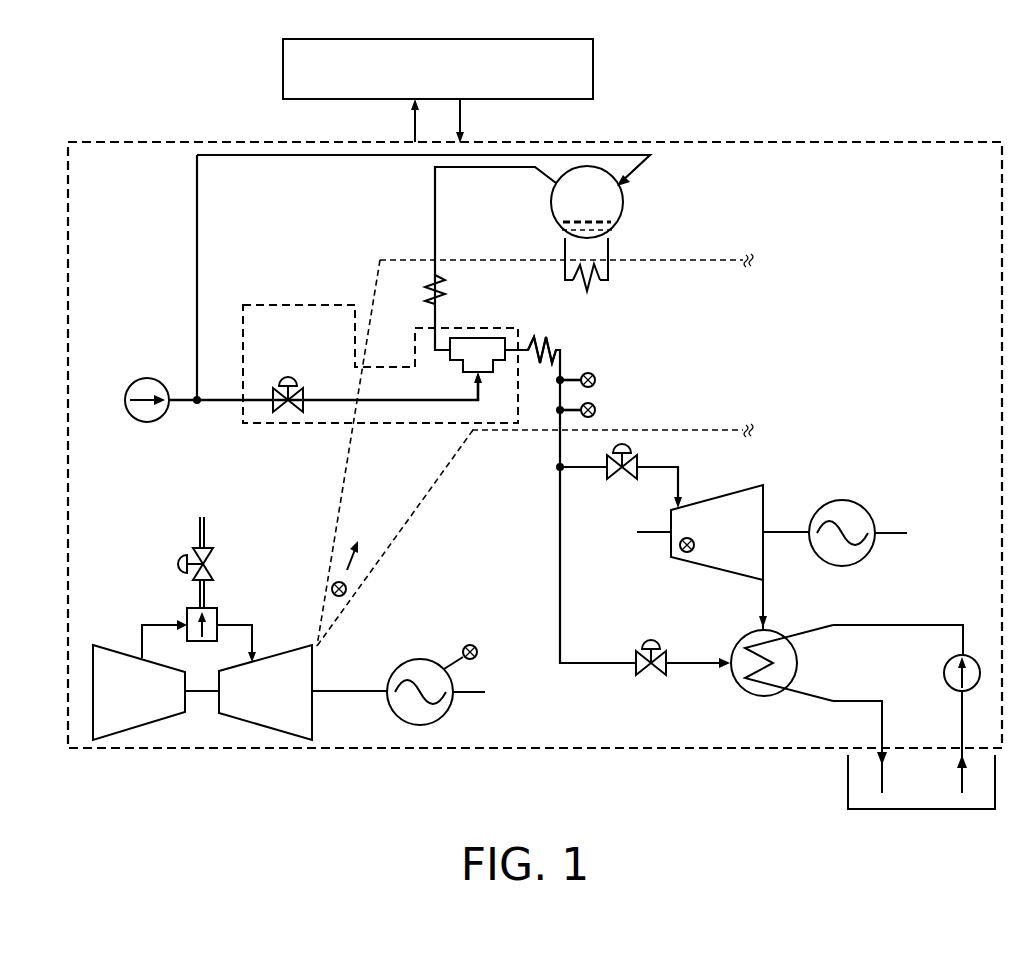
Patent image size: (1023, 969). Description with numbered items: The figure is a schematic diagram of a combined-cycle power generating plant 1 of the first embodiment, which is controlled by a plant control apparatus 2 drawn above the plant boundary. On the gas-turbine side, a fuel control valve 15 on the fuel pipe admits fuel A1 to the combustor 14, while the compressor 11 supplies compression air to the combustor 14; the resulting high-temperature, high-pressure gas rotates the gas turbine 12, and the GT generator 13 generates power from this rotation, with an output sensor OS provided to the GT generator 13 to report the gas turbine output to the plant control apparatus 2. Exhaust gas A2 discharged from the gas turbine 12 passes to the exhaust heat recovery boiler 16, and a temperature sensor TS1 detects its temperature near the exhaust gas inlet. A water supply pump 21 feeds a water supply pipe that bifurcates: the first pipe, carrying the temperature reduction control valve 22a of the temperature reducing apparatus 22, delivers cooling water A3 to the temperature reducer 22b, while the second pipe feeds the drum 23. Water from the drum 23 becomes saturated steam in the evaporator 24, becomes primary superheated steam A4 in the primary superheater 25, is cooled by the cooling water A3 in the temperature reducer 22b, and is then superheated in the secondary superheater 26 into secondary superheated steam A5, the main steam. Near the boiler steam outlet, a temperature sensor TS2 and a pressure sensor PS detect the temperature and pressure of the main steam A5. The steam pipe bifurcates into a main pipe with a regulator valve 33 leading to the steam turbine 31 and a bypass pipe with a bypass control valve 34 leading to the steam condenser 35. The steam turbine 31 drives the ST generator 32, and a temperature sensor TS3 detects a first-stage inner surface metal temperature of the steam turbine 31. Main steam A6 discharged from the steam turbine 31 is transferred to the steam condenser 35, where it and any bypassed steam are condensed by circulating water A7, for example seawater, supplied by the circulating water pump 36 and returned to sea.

The power generating plant 1 is at (832, 142).
The plant control apparatus 2 is at (594, 64).
The compressor 11 is at (113, 645).
The gas turbine 12 is at (313, 718).
The gas turbine (GT) generator 13 is at (423, 659).
The combustor 14 is at (217, 612).
The fuel control valve 15 is at (177, 565).
The exhaust heat recovery boiler 16 is at (343, 480).
The water supply pump 21 is at (147, 378).
The temperature reducing apparatus 22 is at (340, 305).
The temperature reduction control valve 22a is at (288, 376).
The temperature reducer 22b is at (478, 338).
The drum 23 is at (624, 203).
The evaporator 24 is at (609, 269).
The primary superheater 25 is at (438, 278).
The secondary superheater 26 is at (548, 345).
The steam turbine 31 is at (712, 498).
The steam turbine (ST) generator 32 is at (841, 500).
The regulator valve 33 is at (612, 479).
The bypass control valve 34 is at (635, 672).
The steam condenser 35 is at (735, 688).
The circulating water pump 36 is at (945, 681).
The fuel A1 is at (202, 518).
The exhaust gas A2 is at (360, 542).
The cooling water A3 is at (334, 397).
The primary superheated steam A4 is at (435, 322).
The secondary superheated steam (main steam) A5 is at (565, 352).
The main steam discharged from the steam turbine A6 is at (765, 601).
The circulating water A7 is at (848, 780).
The temperature sensor TS1 is at (333, 584).
The temperature sensor TS2 is at (596, 380).
The temperature sensor TS3 is at (685, 553).
The pressure sensor PS is at (596, 410).
The output sensor OS is at (472, 645).